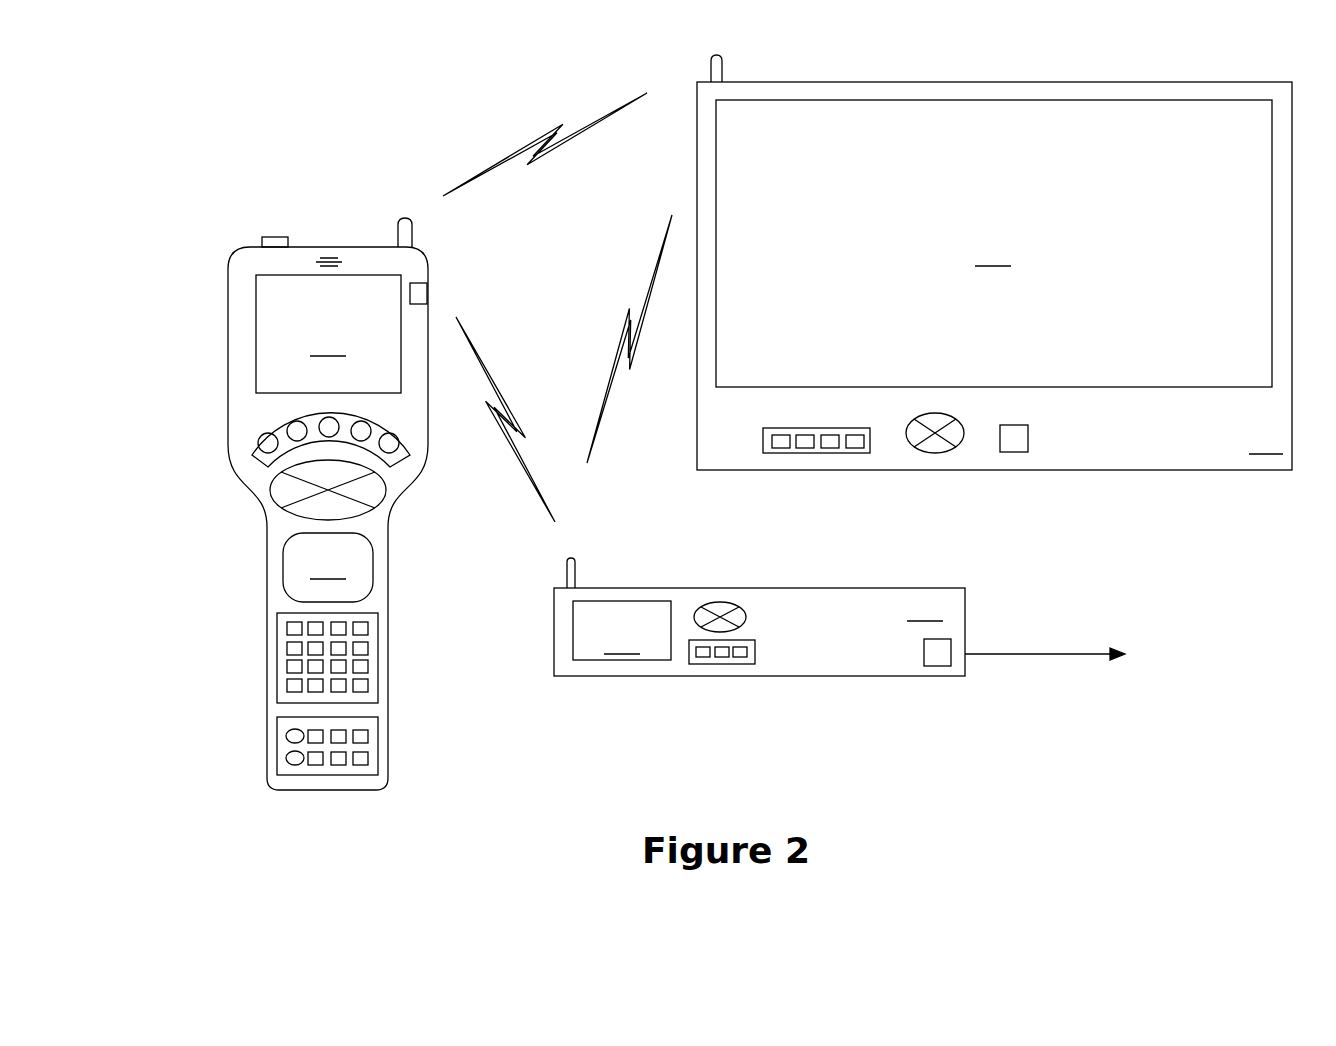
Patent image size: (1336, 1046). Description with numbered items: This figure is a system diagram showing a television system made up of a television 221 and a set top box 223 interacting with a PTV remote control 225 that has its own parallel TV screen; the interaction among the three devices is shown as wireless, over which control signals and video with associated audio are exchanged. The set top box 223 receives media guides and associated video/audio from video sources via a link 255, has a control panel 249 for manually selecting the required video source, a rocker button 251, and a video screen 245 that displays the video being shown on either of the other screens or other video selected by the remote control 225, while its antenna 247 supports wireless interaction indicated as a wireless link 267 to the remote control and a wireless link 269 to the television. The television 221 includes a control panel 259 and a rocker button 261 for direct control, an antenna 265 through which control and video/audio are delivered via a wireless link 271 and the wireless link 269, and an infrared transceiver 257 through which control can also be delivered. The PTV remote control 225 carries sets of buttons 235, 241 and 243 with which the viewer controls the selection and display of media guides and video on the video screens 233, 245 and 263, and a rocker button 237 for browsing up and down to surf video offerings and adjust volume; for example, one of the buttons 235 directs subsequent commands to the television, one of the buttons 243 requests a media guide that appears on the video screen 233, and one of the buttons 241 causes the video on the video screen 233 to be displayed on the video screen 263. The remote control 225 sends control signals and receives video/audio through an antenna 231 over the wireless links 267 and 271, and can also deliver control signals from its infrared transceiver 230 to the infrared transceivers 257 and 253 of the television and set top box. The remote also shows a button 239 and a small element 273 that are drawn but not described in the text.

The television 221 is at (994, 276).
The set top box 223 is at (759, 632).
The PTV remote control 225 is at (267, 710).
The infrared transceiver 230 is at (278, 237).
The antenna 231 is at (398, 230).
The video screen 233 is at (328, 334).
The buttons 235 is at (238, 445).
The rocker button 237 is at (260, 487).
The button 239 is at (328, 567).
The buttons 241 is at (378, 660).
The buttons 243 is at (378, 745).
The video screen 245 is at (622, 630).
The antenna 247 is at (576, 570).
The control panel 249 is at (721, 664).
The rocker button 251 is at (720, 602).
The infrared transceiver 253 is at (936, 666).
The link 255 is at (1087, 654).
The infrared transceiver 257 is at (1008, 452).
The control panel 259 is at (823, 453).
The rocker button 261 is at (935, 453).
The video screen 263 is at (994, 243).
The antenna 265 is at (722, 72).
The wireless link 267 is at (537, 483).
The wireless link 269 is at (617, 357).
The wireless link 271 is at (570, 138).
The phone indicator/port 273 is at (428, 293).